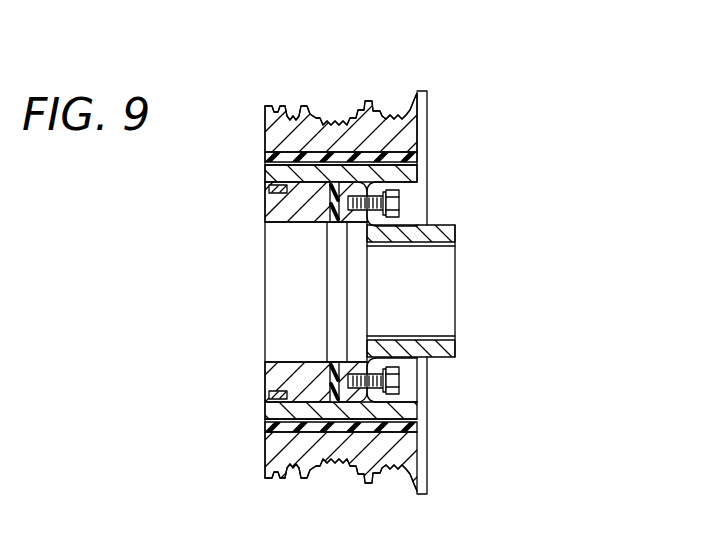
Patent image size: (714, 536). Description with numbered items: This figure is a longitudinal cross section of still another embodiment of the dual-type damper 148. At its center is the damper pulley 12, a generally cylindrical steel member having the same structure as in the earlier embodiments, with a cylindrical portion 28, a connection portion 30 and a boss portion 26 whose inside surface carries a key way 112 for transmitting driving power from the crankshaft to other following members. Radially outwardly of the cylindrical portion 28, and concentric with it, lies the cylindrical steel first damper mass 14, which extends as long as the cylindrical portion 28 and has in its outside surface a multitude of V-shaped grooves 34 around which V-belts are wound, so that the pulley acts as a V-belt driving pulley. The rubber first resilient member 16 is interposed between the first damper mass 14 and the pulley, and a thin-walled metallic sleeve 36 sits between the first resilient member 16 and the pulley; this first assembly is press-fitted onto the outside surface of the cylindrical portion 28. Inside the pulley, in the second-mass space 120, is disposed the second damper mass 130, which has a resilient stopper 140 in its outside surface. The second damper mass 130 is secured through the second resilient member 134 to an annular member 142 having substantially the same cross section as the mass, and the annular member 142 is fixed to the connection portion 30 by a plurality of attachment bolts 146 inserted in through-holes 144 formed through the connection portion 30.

The dual-type damper 148 is at (403, 69).
The V-shaped grooves 34 is at (277, 105).
The first damper mass 14 is at (418, 125).
The first resilient member 16 is at (403, 157).
The metallic sleeve 36 is at (268, 163).
The cylindrical portion 28 is at (266, 173).
The second damper mass 130 is at (279, 221).
The second resilient member 134 is at (332, 224).
The resilient stopper 140 is at (280, 392).
The through-holes 144 is at (388, 205).
The attachment bolts 146 is at (410, 193).
The connection portion 30 is at (390, 403).
The second-mass space 120 is at (312, 321).
The annular member 142 is at (355, 224).
The boss portion 26 is at (448, 233).
The key way 112 is at (437, 247).
The damper pulley 12 is at (468, 308).